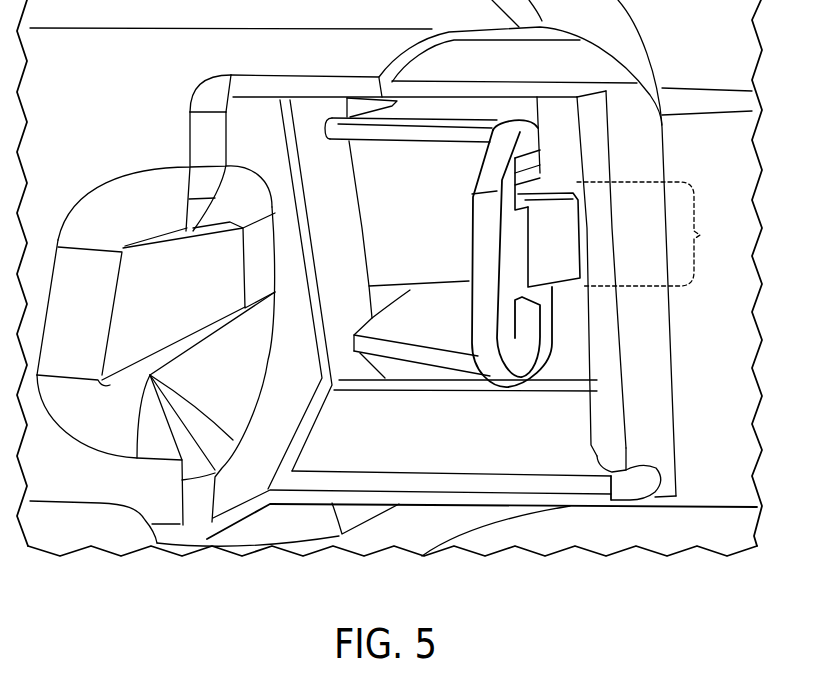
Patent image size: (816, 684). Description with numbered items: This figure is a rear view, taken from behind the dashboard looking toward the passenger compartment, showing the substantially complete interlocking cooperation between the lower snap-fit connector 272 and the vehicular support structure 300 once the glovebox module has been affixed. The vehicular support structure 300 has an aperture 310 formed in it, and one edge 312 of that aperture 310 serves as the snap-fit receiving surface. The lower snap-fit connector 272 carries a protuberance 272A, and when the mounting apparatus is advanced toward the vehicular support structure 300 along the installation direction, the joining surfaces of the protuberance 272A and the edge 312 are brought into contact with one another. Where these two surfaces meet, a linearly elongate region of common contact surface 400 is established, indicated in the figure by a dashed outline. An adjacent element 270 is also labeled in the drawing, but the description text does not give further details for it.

The seat back panel 270 is at (466, 101).
The attachment bracket 272 is at (538, 191).
The mounting flange 272A is at (573, 229).
The base 300 is at (457, 447).
The seat shell 310 is at (436, 226).
The retaining strap 312 is at (547, 305).
The attachment assembly 400 is at (700, 235).